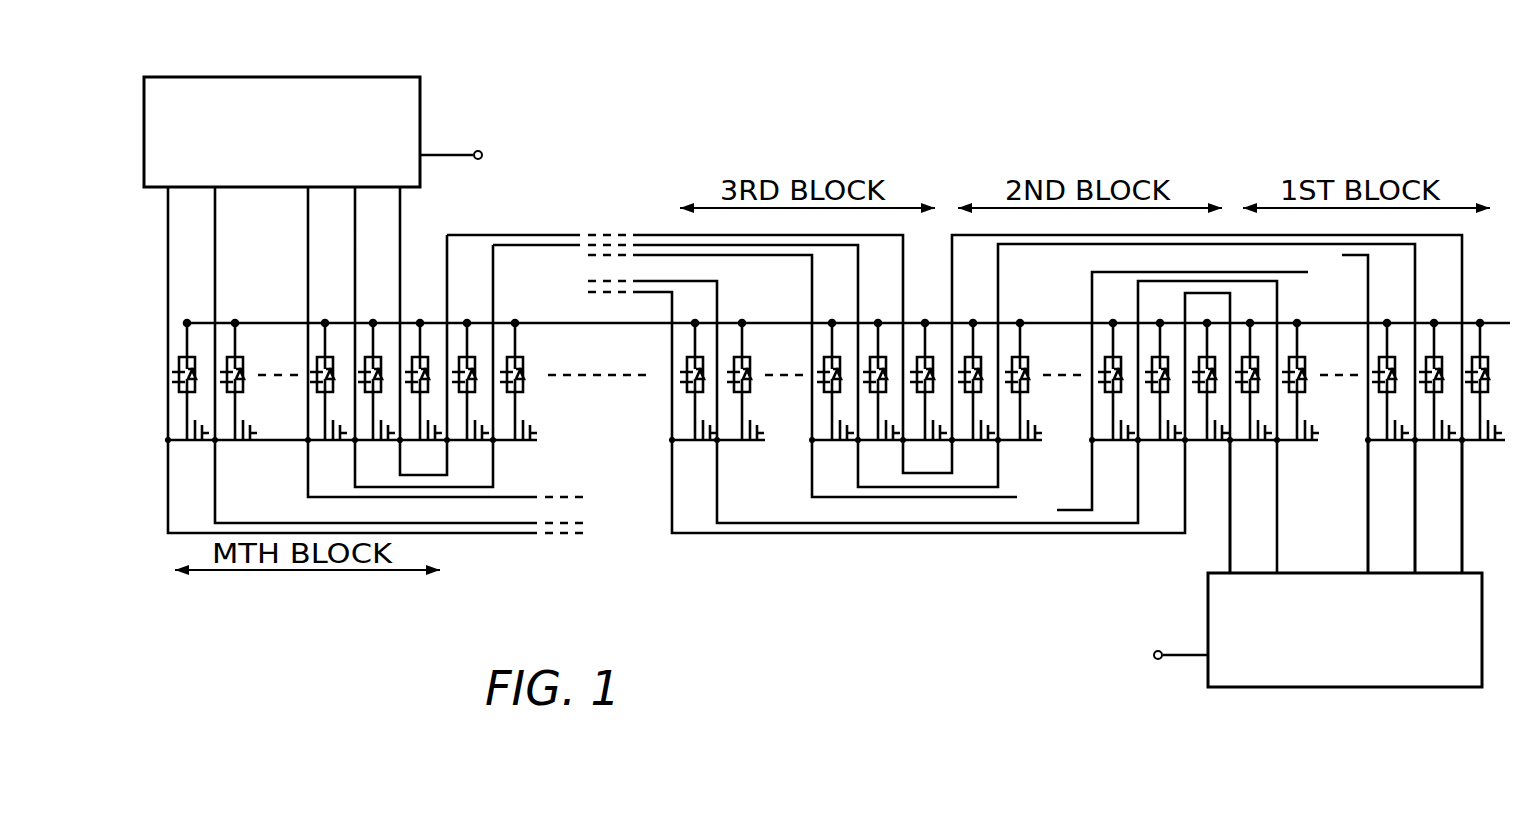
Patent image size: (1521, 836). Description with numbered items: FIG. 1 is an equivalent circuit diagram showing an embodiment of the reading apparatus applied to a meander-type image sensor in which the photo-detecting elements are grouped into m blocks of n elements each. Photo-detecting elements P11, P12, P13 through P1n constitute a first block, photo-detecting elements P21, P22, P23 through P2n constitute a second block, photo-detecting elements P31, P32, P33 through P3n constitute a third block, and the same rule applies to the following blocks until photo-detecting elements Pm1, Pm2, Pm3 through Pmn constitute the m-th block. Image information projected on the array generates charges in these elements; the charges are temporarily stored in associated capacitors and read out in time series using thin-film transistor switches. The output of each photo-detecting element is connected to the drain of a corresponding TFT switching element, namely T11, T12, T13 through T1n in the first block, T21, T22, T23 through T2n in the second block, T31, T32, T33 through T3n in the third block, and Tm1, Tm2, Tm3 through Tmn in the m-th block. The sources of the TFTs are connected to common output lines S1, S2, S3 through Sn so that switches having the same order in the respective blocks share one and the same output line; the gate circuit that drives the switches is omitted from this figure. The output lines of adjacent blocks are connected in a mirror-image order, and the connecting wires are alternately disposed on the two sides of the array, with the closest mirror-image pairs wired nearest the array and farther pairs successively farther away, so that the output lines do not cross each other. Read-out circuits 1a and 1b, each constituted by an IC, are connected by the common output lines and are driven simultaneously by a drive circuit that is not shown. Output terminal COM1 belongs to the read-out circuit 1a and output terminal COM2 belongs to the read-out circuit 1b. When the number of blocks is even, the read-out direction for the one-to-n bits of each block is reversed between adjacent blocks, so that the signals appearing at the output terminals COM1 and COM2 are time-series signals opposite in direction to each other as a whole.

The read-out circuit 1a is at (1208, 588).
The read-out circuit 1b is at (390, 77).
The output terminal COM1 is at (1134, 655).
The output terminal COM2 is at (501, 159).
The photo-detecting element Pmn is at (200, 315).
The photo-detecting element Pm3 is at (330, 306).
The photo-detecting element Pm2 is at (378, 308).
The photo-detecting element Pm1 is at (425, 310).
The photo-detecting element P3n is at (690, 306).
The photo-detecting element P33 is at (835, 306).
The photo-detecting element P32 is at (880, 295).
The photo-detecting element P31 is at (935, 310).
The photo-detecting element P2n is at (985, 307).
The photo-detecting element P23 is at (1115, 302).
The photo-detecting element P22 is at (1160, 308).
The photo-detecting element P21 is at (1212, 308).
The photo-detecting element P1n is at (1262, 307).
The photo-detecting element P13 is at (1391, 342).
The photo-detecting element P12 is at (1439, 342).
The photo-detecting element P11 is at (1482, 342).
The TFT switching element Tmn is at (188, 477).
The TFT switching element Tm3 is at (320, 483).
The TFT switching element Tm2 is at (373, 463).
The TFT switching element Tm1 is at (433, 461).
The TFT switching element T3n is at (693, 462).
The TFT switching element T33 is at (822, 460).
The TFT switching element T32 is at (875, 460).
The TFT switching element T31 is at (930, 470).
The TFT switching element T2n is at (975, 462).
The TFT switching element T23 is at (1118, 463).
The TFT switching element T22 is at (1163, 441).
The TFT switching element T21 is at (1209, 440).
The TFT switching element T1n is at (1253, 440).
The TFT switching element T13 is at (1391, 441).
The TFT switching element T12 is at (1439, 441).
The TFT switching element T11 is at (1485, 441).
The common output line Sn is at (1248, 506).
The common output line S3 is at (1385, 506).
The common output line S2 is at (1433, 506).
The common output line S1 is at (1478, 506).